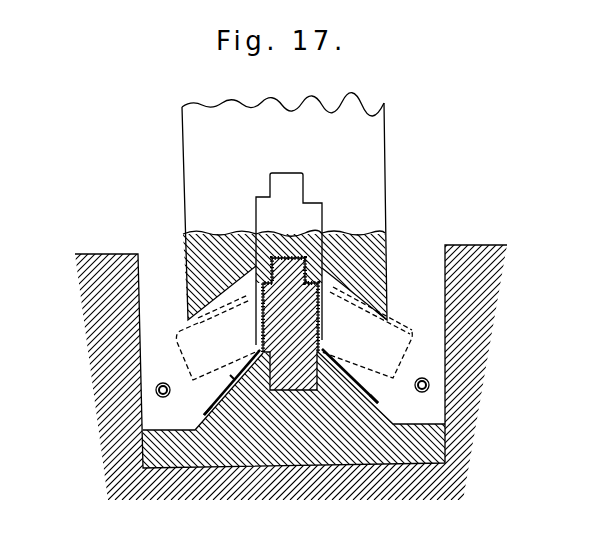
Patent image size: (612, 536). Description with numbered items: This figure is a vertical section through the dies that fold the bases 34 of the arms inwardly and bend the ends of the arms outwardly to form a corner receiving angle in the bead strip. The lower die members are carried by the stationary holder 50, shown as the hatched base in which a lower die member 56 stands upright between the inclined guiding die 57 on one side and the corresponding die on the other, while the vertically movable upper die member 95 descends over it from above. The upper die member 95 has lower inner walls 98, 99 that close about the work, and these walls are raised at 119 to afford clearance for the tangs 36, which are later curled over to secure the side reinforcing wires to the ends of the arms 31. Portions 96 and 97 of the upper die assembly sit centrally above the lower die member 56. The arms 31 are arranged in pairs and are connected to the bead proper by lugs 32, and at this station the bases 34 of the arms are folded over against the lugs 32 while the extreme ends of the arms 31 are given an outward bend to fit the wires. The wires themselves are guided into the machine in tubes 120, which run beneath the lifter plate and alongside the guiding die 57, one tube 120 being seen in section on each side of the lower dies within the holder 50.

The arms 31 is at (374, 397).
The lugs 32 is at (257, 303).
The tilted plate position 34 is at (321, 338).
The tangs 36 is at (227, 381).
The stationary holder 50 is at (467, 253).
The central plunger 56 is at (300, 292).
The guiding die 57 is at (206, 418).
The upper die member 95 is at (366, 178).
The inner tube 96 is at (289, 259).
The filling material 97 is at (322, 229).
The coating layer 98 is at (260, 322).
The lower inner walls 99 is at (338, 282).
The raised portion 119 is at (382, 317).
The tubes 120 is at (161, 386).